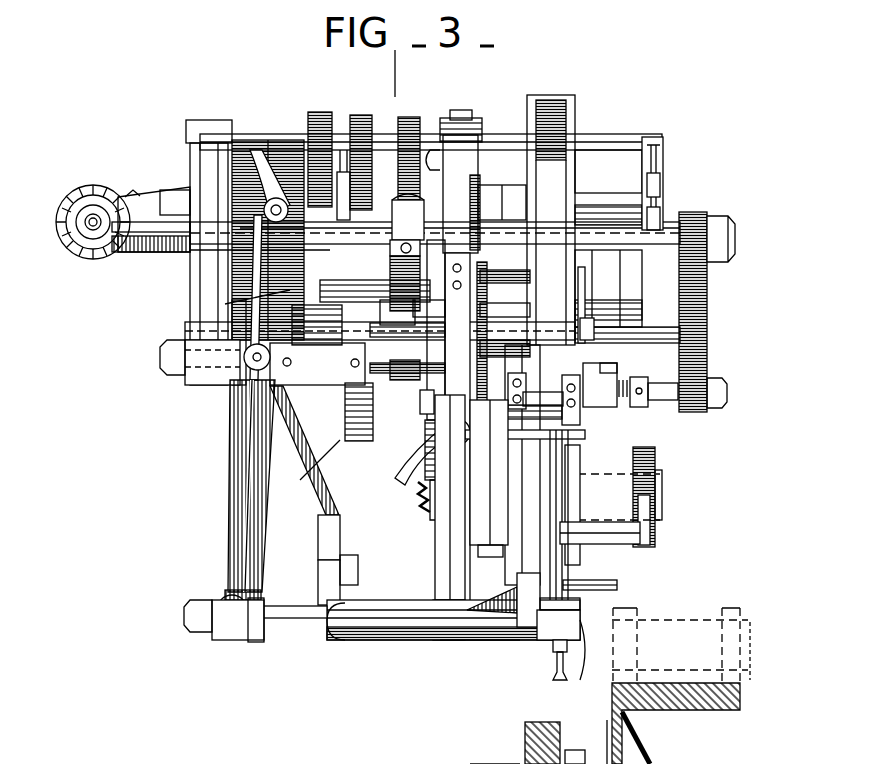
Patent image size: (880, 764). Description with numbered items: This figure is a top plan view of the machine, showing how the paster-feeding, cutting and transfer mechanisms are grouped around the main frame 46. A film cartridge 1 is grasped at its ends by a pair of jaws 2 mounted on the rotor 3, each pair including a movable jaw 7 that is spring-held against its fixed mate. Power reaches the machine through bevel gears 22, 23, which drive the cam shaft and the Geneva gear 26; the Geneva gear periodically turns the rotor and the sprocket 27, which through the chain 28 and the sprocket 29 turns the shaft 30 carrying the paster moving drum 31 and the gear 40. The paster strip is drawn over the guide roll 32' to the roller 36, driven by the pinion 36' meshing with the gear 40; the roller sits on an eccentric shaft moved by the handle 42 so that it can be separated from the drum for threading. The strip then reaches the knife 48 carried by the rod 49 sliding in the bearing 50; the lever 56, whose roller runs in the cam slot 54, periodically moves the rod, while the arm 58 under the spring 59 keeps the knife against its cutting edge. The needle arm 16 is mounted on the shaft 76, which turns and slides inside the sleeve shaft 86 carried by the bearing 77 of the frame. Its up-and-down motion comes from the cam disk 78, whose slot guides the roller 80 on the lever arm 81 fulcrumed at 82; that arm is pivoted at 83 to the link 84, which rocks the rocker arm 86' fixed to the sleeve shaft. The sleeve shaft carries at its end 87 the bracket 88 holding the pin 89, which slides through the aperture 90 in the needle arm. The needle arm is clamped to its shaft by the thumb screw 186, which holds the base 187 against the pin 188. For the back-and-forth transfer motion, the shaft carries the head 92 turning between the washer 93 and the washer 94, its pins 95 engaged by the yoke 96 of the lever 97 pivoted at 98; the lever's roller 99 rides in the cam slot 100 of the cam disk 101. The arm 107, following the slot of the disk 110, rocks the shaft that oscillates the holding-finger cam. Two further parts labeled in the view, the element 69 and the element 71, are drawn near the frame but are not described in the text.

The film cartridge 1 is at (602, 478).
The pair of jaws 2 is at (664, 189).
The rotor 3 is at (655, 540).
The movable jaw 7 is at (742, 615).
The needle arm 16 is at (580, 498).
The bevel gear 22 is at (80, 262).
The bevel gear 23 is at (128, 258).
The Geneva gear 26 is at (570, 752).
The sprocket 27 is at (495, 754).
The chain 28 is at (420, 410).
The sprocket 29 is at (398, 214).
The shaft 30 is at (190, 330).
The paster moving drum 31 is at (604, 407).
The guide roll 32' is at (610, 305).
The roller 36 is at (627, 348).
The pinion 36' is at (688, 312).
The gear 40 is at (480, 282).
The handle 42 is at (587, 322).
The frame 46 is at (435, 553).
The knife 48 is at (585, 435).
The rod 49 is at (405, 485).
The bearing 50 is at (420, 500).
The cam slot 54 is at (410, 118).
The lever 56 is at (305, 467).
The arm 58 is at (418, 456).
The spring 59 is at (435, 510).
The slide block 69 is at (500, 545).
The rod 71 is at (618, 590).
The shaft 76 is at (288, 620).
The bearing 77 is at (445, 640).
The cam disk 78 is at (362, 118).
The roller 80 is at (342, 172).
The lever arm 81 is at (325, 442).
The fulcrum 82 is at (320, 400).
The pivot 83 is at (318, 530).
The link 84 is at (318, 549).
The sleeve shaft 86 is at (453, 632).
The rocker arm 86' is at (317, 580).
The end of sleeve shaft 87 is at (505, 630).
The bracket 88 is at (517, 575).
The pin 89 is at (618, 586).
The aperture 90 is at (556, 585).
The head 92 is at (240, 640).
The washer 93 is at (256, 642).
The washer 94 is at (205, 633).
The pins 95 is at (230, 605).
The yoke 96 is at (245, 590).
The lever 97 is at (240, 494).
The pivot 98 is at (250, 390).
The roller 99 is at (272, 205).
The cam slot 100 is at (258, 150).
The cam disk 101 is at (292, 140).
The arm 107 is at (225, 304).
The disk 110 is at (312, 114).
The thumb screw 186 is at (553, 660).
The base 187 is at (580, 678).
The pin 188 is at (578, 615).